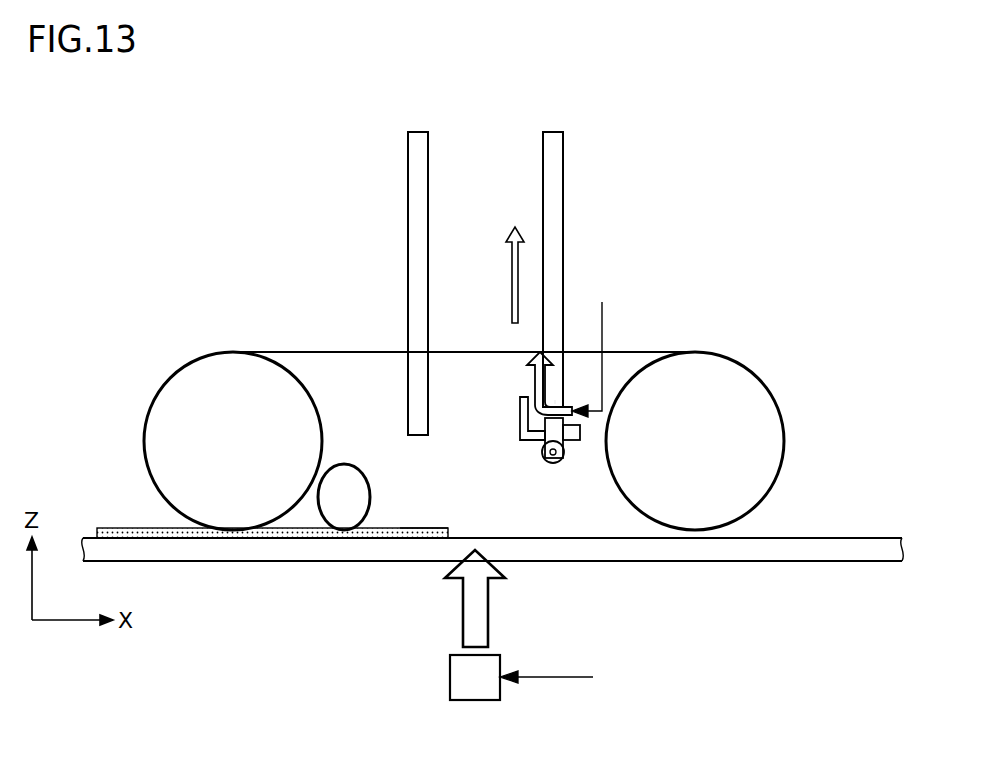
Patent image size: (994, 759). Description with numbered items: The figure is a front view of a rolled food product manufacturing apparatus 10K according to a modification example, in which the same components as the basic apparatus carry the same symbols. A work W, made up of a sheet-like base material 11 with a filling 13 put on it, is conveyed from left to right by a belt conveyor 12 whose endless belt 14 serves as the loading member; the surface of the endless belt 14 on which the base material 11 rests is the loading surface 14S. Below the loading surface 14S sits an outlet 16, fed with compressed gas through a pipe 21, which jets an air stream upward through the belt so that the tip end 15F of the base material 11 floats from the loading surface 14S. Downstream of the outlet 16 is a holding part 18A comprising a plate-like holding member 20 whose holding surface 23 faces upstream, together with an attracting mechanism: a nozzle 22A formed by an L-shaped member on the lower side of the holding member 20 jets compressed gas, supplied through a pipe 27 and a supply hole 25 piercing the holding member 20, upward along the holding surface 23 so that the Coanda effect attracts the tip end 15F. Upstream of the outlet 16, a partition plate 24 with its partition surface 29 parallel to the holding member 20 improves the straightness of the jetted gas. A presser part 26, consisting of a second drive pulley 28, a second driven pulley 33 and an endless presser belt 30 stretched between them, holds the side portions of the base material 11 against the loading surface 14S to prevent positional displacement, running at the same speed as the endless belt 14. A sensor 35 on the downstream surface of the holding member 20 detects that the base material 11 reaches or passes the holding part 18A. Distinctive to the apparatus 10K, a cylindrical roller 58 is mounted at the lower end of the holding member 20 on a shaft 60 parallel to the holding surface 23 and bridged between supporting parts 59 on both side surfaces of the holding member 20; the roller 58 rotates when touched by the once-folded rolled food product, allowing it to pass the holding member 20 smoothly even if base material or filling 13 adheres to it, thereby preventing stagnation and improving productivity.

The manufacturing apparatus 10K is at (774, 176).
The base material 11 is at (127, 528).
The work W is at (147, 515).
The belt conveyor 12 is at (869, 462).
The filling 13 is at (371, 488).
The endless belt 14 is at (800, 535).
The loading surface 14S is at (828, 538).
The tip end 15F is at (417, 530).
The outlet 16 is at (450, 682).
The holding part 18A is at (578, 155).
The holding member 20 is at (564, 235).
The pipe 21 is at (550, 677).
The nozzle 22A is at (527, 390).
The holding surface 23 is at (543, 198).
The partition plate 24 is at (418, 138).
The supply hole 25 is at (555, 403).
The presser part 26 is at (746, 355).
The pipe 27 is at (603, 325).
The second drive pulley 28 is at (164, 390).
The partition surface 29 is at (408, 230).
The presser belt 30 is at (315, 351).
The second driven pulley 33 is at (770, 418).
The sensor 35 is at (572, 440).
The roller 58 is at (539, 449).
The supporting part 59 is at (520, 428).
The shaft 60 is at (550, 460).